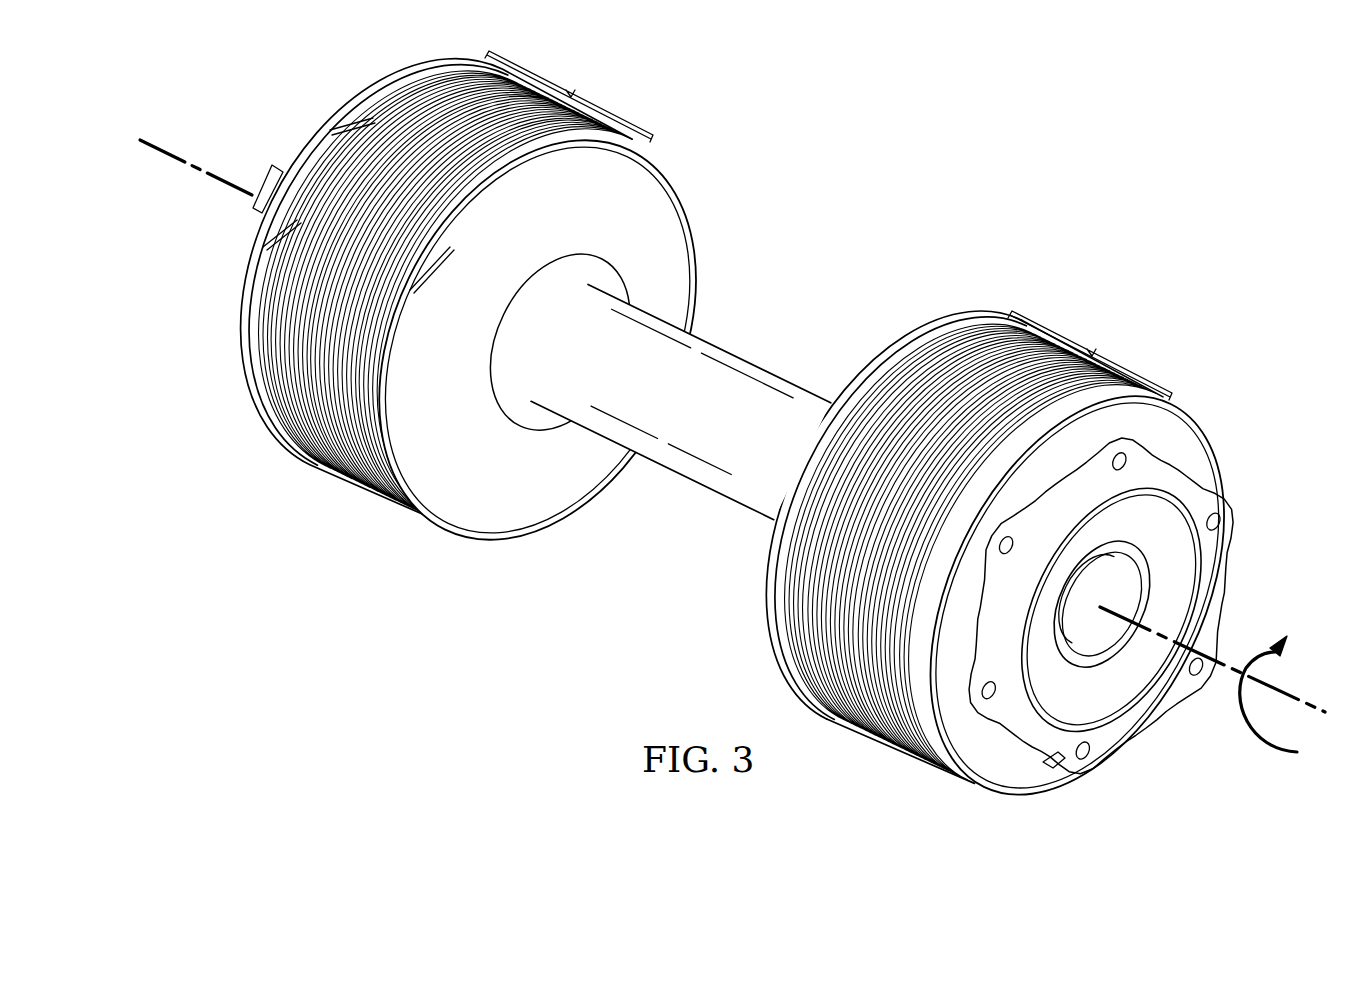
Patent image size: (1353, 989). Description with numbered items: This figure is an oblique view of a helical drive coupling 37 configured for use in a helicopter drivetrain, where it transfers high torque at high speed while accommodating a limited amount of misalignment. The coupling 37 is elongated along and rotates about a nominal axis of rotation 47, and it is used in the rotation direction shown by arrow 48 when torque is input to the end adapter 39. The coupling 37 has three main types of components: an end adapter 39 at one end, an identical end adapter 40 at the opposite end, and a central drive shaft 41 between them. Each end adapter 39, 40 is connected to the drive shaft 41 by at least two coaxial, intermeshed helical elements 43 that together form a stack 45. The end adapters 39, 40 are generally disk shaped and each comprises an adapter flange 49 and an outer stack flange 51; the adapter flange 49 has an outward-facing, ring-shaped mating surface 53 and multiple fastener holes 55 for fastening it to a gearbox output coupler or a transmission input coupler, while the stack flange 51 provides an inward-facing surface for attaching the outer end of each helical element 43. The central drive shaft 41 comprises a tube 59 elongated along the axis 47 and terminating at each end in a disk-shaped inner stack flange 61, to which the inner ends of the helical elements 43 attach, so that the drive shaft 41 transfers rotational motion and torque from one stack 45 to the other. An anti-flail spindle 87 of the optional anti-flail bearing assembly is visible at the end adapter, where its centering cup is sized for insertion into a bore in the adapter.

The helical drive coupling 37 is at (739, 432).
The end adapter 39 is at (996, 555).
The end adapter 40 is at (405, 267).
The central drive shaft 41 is at (681, 401).
The helical elements 43 is at (674, 397).
The stack 45 is at (828, 225).
The nominal axis of rotation 47 is at (1310, 700).
The arrow 48 is at (1270, 760).
The adapter flange 49 is at (256, 166).
The outer stack flange 51 is at (1090, 602).
The mating surface 53 is at (1111, 609).
The fastener holes 55 is at (1101, 606).
The tube 59 is at (681, 396).
The inner stack flange 61 is at (865, 491).
The anti-flail spindle 87 is at (1102, 603).